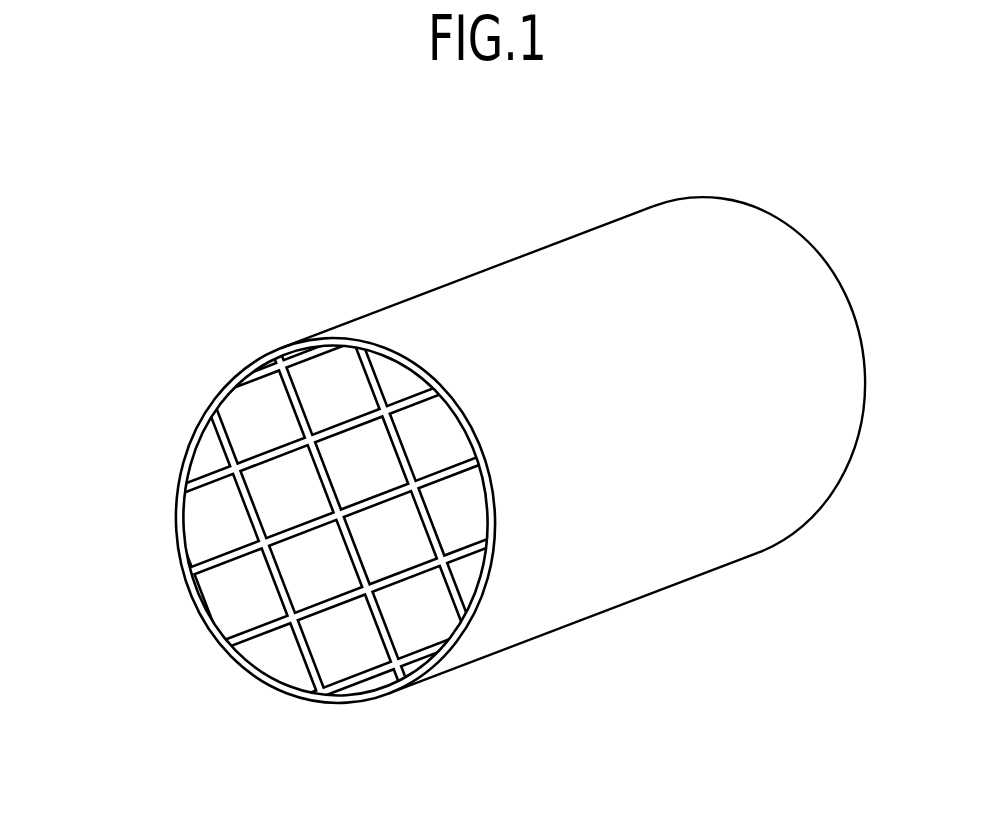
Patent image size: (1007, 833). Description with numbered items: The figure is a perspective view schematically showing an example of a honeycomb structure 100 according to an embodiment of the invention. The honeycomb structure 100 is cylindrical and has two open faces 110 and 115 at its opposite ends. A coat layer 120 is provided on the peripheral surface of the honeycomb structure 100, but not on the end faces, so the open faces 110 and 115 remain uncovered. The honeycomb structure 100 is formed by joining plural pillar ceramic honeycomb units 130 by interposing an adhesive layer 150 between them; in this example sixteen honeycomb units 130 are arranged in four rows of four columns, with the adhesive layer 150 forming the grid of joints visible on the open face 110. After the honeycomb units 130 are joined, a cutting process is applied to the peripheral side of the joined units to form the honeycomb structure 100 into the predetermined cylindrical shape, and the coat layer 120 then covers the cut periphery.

The honeycomb structure 100 is at (180, 160).
The open face 110 is at (112, 485).
The open face 115 is at (855, 236).
The coat layer 120 is at (440, 317).
The honeycomb unit 130 is at (210, 453).
The adhesive layer 150 is at (460, 595).